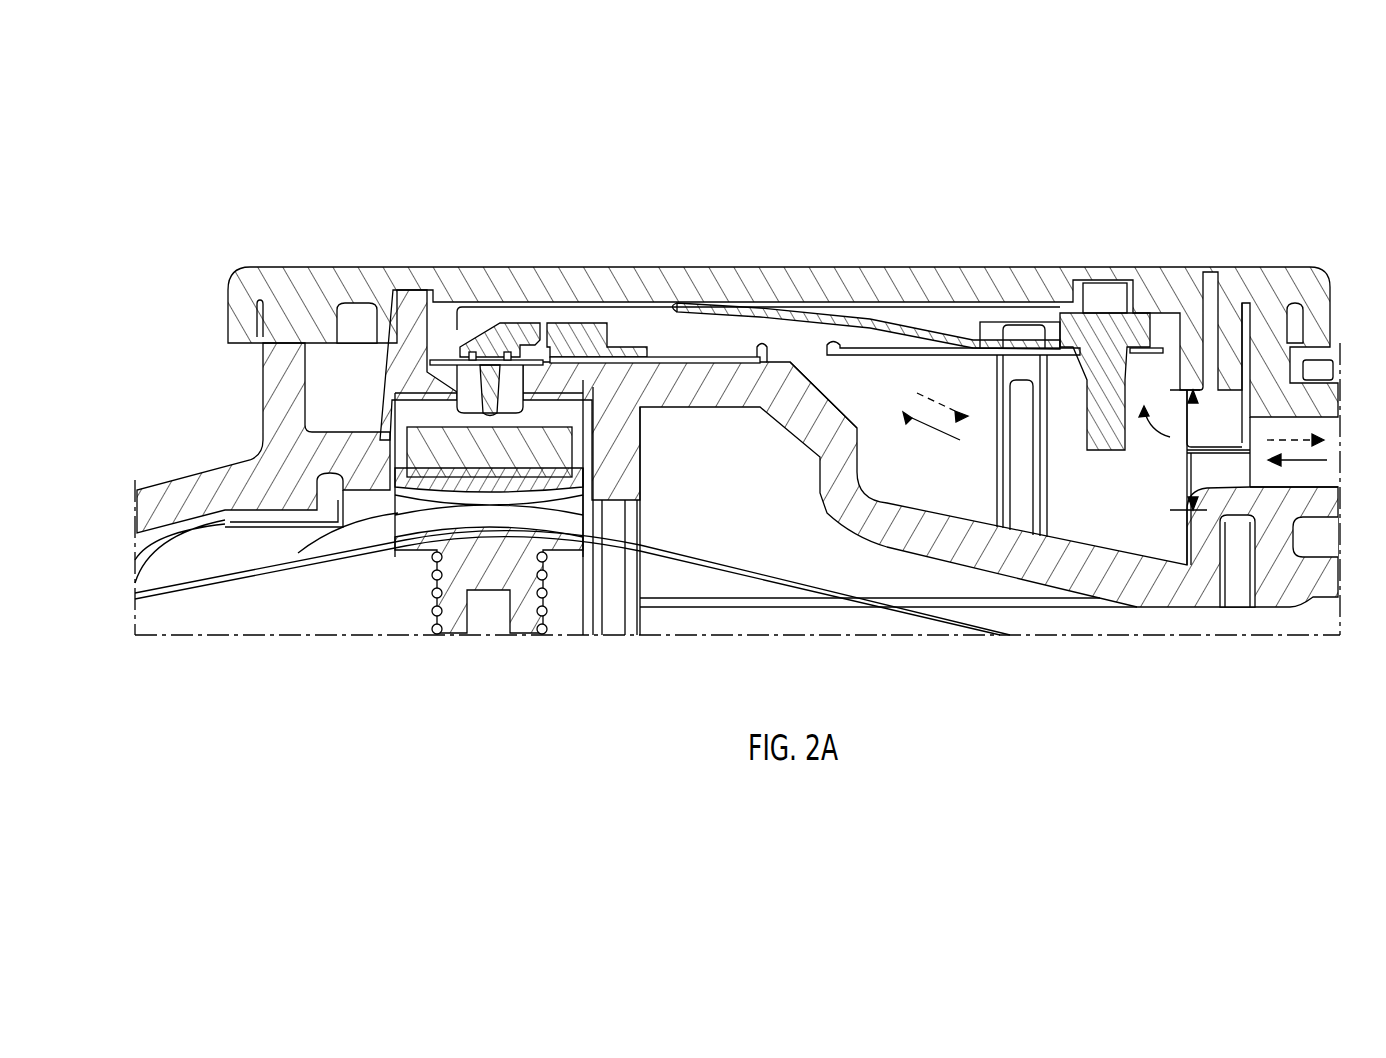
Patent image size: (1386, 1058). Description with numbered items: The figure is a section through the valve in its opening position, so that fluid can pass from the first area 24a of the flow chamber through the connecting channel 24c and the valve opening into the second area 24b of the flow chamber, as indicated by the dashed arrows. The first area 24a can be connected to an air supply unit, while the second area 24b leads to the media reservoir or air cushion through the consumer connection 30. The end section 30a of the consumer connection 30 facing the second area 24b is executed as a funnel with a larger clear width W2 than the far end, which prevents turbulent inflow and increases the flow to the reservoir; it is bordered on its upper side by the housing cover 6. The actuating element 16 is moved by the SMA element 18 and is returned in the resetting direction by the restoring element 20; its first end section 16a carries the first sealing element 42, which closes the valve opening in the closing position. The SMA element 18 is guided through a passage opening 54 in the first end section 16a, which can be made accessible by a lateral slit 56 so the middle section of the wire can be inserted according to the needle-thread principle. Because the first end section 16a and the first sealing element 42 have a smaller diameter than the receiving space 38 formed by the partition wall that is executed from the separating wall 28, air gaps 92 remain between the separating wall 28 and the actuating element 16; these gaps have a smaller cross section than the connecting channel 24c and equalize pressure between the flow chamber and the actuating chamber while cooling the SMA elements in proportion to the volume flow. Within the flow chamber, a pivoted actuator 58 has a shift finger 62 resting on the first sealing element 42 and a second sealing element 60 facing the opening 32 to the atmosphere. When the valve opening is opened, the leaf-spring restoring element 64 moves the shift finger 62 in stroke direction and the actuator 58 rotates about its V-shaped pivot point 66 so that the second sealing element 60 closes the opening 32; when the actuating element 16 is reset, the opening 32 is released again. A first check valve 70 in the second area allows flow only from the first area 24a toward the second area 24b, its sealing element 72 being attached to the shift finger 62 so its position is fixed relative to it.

The housing cover 6 is at (672, 270).
The actuating element 16 is at (453, 610).
The first end section 16a is at (573, 499).
The SMA element 18 is at (803, 577).
The restoring element 20 is at (543, 605).
The first area of the flow chamber 24a is at (350, 385).
The second area of the flow chamber 24b is at (951, 385).
The connecting channel 24c is at (447, 343).
The separating wall 28 is at (623, 449).
The consumer connection 30 is at (1223, 423).
The end section of the consumer connection 30a is at (1287, 427).
The opening 32 is at (1090, 278).
The receiving space 38 is at (393, 447).
The first sealing element 42 is at (476, 464).
The passage opening 54 is at (567, 524).
The lateral slit 56 is at (270, 566).
The actuator 58 is at (898, 323).
The second sealing element 60 is at (1115, 323).
The shift finger 62 is at (525, 327).
The restoring element 64 is at (727, 305).
The V-shaped pivot point 66 is at (795, 373).
The first check valve 70 is at (496, 348).
The sealing element 72 is at (548, 335).
The air gap 92 is at (298, 553).
The clear width W2 is at (1194, 386).